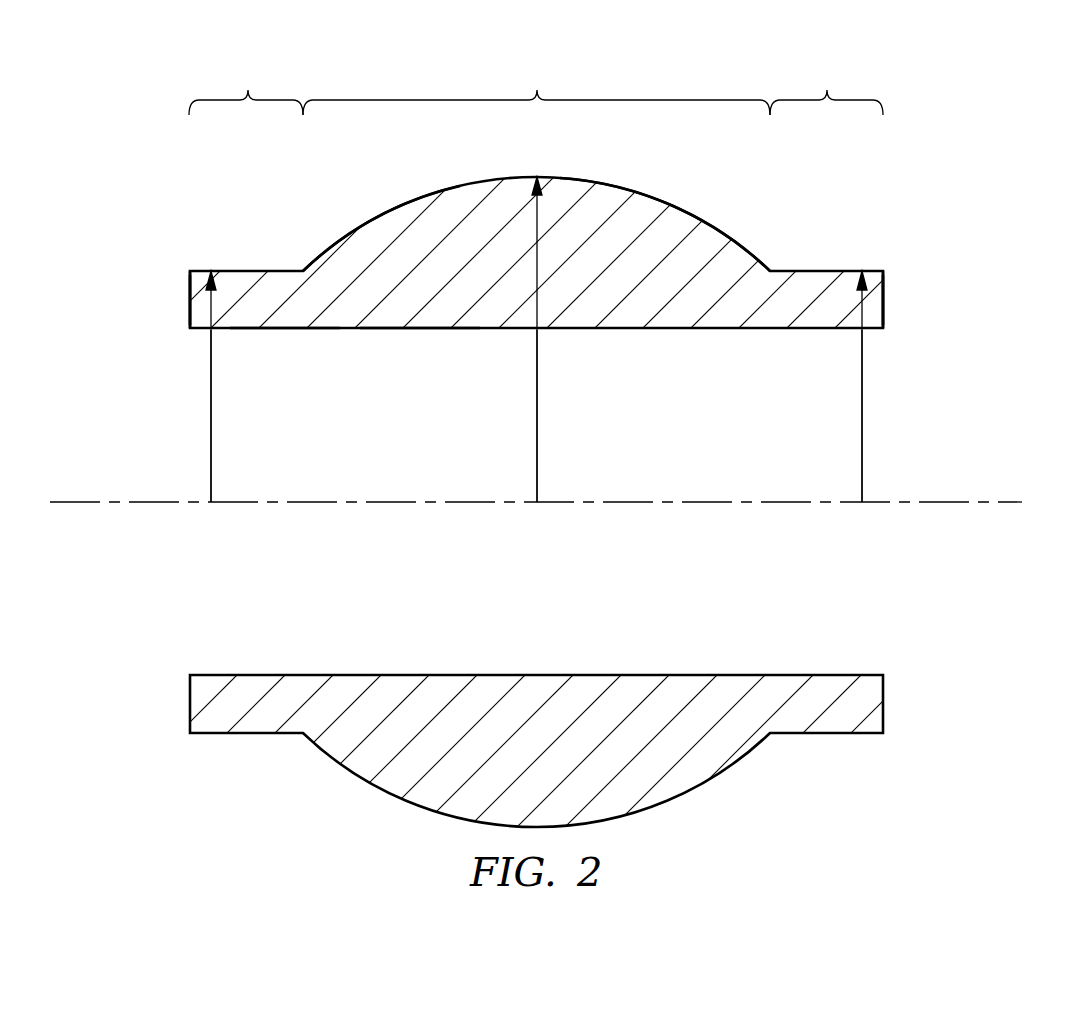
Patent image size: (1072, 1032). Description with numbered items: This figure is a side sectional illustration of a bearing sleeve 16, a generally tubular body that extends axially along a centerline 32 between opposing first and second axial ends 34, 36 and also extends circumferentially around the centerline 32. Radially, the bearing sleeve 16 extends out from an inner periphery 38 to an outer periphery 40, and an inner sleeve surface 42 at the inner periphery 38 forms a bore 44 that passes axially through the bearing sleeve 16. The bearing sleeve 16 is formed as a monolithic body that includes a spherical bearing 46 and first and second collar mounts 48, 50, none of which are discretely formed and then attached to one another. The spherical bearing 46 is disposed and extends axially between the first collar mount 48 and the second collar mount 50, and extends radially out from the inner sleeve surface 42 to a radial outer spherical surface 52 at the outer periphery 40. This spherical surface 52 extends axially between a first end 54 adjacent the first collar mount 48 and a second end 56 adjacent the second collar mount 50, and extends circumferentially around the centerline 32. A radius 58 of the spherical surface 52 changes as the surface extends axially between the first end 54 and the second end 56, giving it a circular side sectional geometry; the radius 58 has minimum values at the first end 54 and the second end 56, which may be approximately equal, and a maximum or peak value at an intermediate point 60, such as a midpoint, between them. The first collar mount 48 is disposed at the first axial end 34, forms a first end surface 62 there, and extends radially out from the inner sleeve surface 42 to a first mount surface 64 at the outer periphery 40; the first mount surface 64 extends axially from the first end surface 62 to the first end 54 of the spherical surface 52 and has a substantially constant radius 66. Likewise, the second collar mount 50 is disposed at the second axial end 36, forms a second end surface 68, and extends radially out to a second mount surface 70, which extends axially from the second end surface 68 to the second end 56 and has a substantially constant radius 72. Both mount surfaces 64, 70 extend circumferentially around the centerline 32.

The bearing sleeve 16 is at (900, 165).
The centerline 32 is at (921, 506).
The first axial end 34 is at (138, 302).
The second axial end 36 is at (884, 303).
The inner periphery 38 is at (403, 345).
The outer periphery 40 is at (423, 180).
The inner sleeve surface 42 is at (290, 331).
The bore 44 is at (438, 473).
The spherical bearing 46 is at (536, 87).
The first collar mount 48 is at (246, 87).
The second collar mount 50 is at (826, 87).
The spherical surface 52 is at (614, 181).
The first end 54 is at (300, 269).
The second end 56 is at (778, 269).
The radius 58 is at (538, 398).
The intermediate point 60 is at (535, 174).
The first end surface 62 is at (189, 300).
The first mount surface 64 is at (229, 269).
The radius 66 is at (210, 434).
The second end surface 68 is at (948, 303).
The second mount surface 70 is at (841, 269).
The radius 72 is at (864, 425).